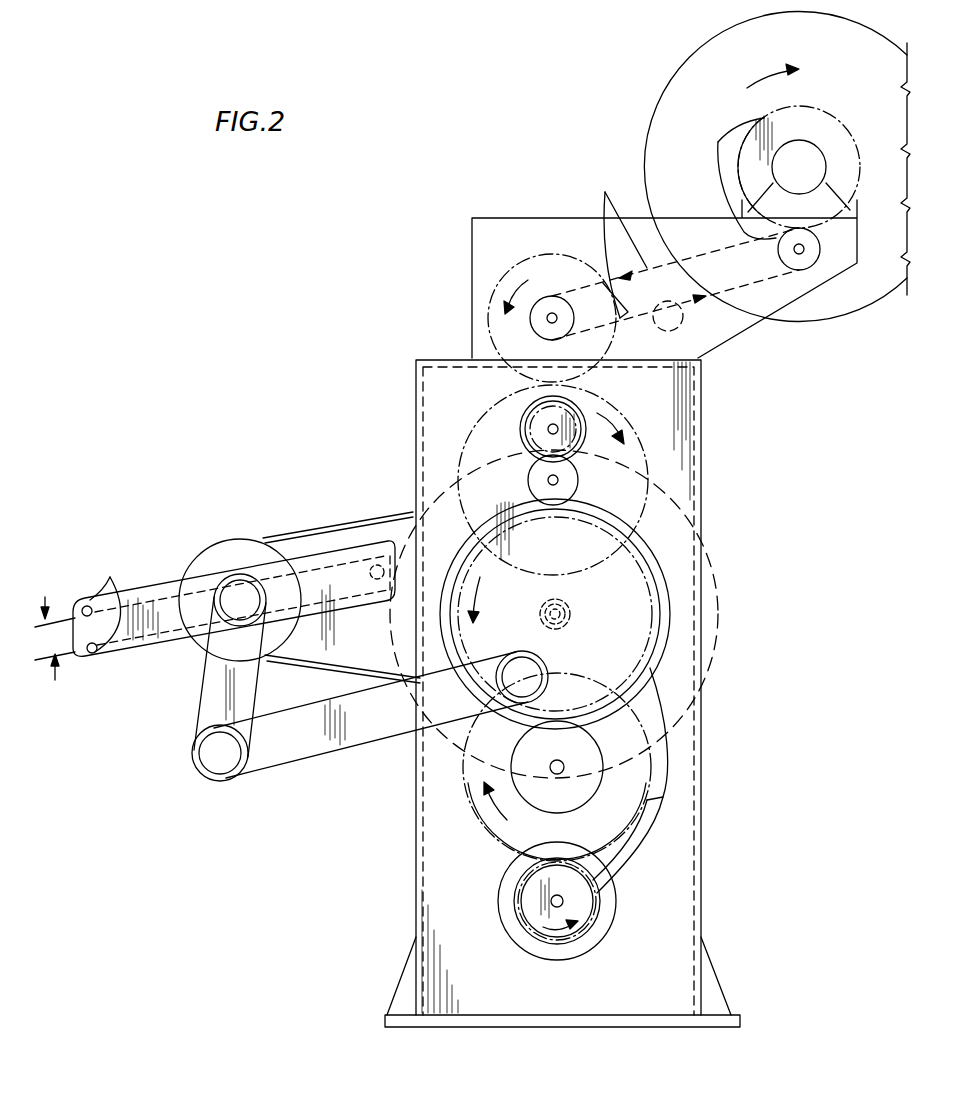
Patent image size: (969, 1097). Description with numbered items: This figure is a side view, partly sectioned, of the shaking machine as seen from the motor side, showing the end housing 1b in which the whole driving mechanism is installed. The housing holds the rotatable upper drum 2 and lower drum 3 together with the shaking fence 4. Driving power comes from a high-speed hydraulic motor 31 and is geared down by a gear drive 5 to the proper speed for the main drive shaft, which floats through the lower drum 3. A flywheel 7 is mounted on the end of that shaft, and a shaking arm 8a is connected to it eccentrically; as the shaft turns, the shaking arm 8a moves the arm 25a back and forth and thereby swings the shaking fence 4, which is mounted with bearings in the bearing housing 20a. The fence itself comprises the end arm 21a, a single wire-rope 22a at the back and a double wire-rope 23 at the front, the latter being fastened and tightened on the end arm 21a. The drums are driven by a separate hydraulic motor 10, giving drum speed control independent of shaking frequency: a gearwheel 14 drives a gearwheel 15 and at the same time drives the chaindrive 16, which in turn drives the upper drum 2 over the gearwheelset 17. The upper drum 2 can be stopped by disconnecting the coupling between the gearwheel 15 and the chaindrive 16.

The end housing 1b is at (687, 868).
The upper drum 2 is at (647, 188).
The gearwheelset 17 is at (718, 142).
The chaindrive 16 is at (605, 193).
The gearwheel 15 is at (490, 318).
The hydraulic motor 10 is at (582, 412).
The gearwheel 14 is at (638, 453).
The flywheel 7 is at (670, 660).
The lower drum 3 is at (712, 608).
The gear drive 5 is at (665, 796).
The motor 31 is at (603, 908).
The bearing housing 20a is at (217, 540).
The shaking fence 4 is at (108, 666).
The double wire-rope 23 is at (118, 585).
The single wire-rope 22a is at (377, 565).
The arm 25a is at (213, 692).
The end arm 21a is at (277, 664).
The shaking arm 8a is at (305, 748).